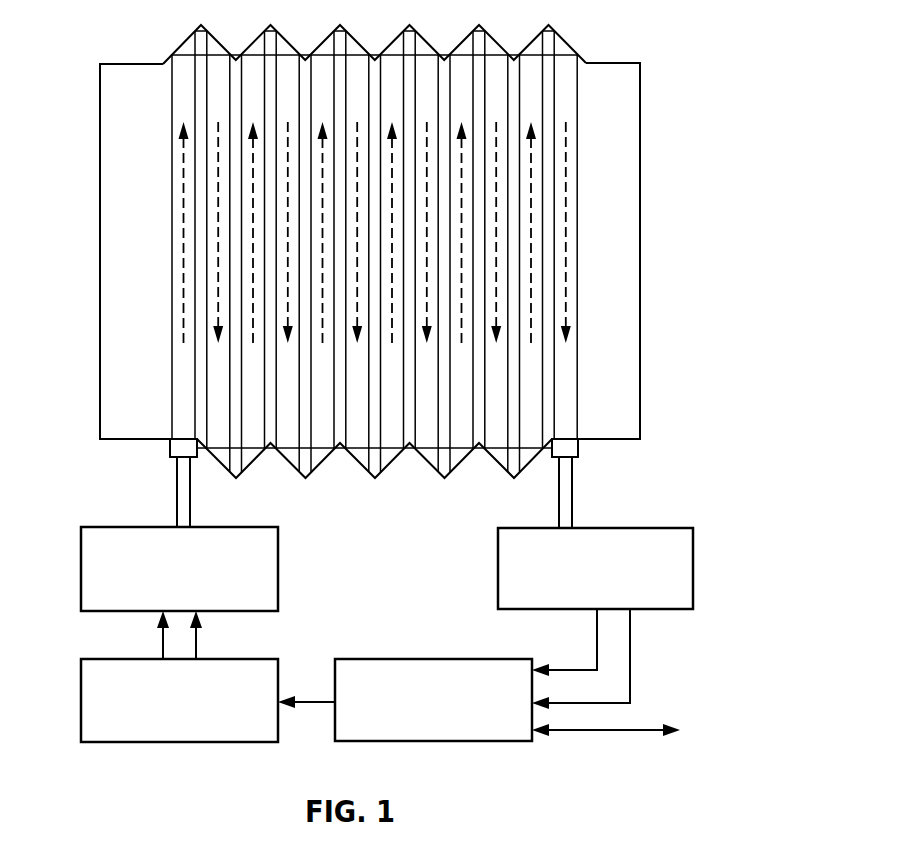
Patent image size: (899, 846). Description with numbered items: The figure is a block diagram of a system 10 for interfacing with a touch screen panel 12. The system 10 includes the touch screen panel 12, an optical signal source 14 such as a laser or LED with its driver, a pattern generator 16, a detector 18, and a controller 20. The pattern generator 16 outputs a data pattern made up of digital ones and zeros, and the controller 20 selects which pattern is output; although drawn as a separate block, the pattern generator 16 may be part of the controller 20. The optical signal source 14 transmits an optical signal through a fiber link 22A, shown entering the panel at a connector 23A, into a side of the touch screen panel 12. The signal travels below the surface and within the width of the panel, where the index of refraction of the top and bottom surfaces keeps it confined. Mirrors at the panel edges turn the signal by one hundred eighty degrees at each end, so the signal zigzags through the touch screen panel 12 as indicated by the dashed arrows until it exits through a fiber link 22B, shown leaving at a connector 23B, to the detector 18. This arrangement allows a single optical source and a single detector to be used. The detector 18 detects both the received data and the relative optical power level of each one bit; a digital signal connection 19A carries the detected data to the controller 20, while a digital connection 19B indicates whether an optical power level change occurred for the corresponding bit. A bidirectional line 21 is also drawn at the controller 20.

The system 10 is at (682, 57).
The touch screen panel 12 is at (100, 120).
The optical signal source 14 is at (168, 605).
The pattern generator 16 is at (168, 736).
The detector 18 is at (584, 591).
The digital signal connection 19A is at (597, 653).
The digital connection 19B is at (630, 653).
The controller 20 is at (421, 723).
The bidirectional communication line 21 is at (641, 728).
The fiber link 22A is at (190, 527).
The fiber link 22B is at (572, 527).
The input connector 23A is at (170, 453).
The output connector 23B is at (578, 447).